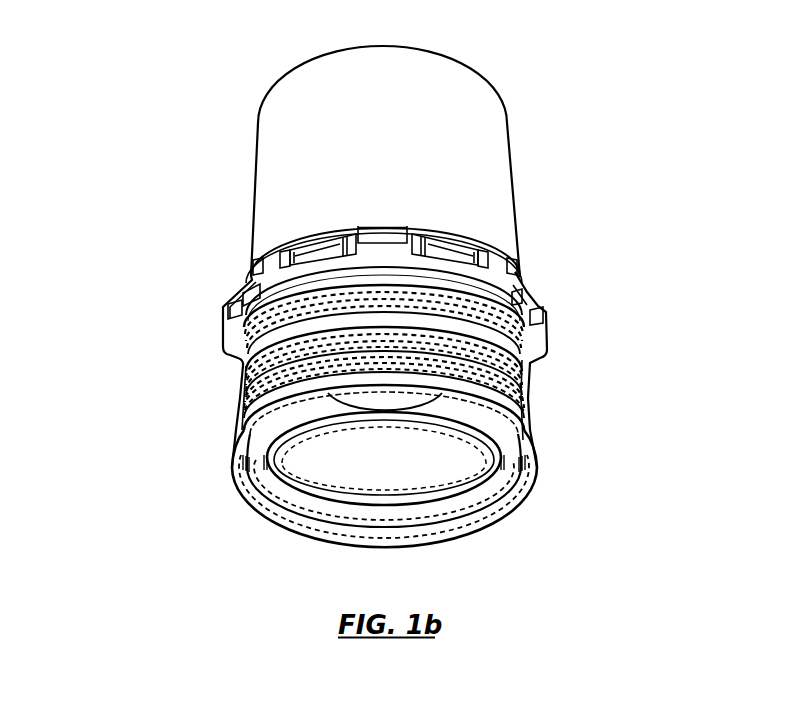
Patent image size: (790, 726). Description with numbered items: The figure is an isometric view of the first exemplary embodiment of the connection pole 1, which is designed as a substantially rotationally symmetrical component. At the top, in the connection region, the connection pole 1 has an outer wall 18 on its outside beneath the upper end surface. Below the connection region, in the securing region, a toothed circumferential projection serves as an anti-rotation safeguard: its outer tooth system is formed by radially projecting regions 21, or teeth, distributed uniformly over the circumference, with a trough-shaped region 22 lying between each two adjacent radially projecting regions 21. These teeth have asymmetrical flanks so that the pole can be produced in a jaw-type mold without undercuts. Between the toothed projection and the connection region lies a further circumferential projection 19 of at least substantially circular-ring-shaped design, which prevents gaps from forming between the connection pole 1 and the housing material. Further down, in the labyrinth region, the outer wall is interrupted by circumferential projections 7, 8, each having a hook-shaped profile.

The connection pole 1 is at (516, 48).
The outer wall 18 is at (260, 187).
The further circumferential projection 19 is at (244, 287).
The radially projecting regions 21 is at (224, 336).
The trough-shaped region 22 is at (517, 297).
The circumferential projection 7 is at (513, 374).
The circumferential projection 8 is at (528, 429).